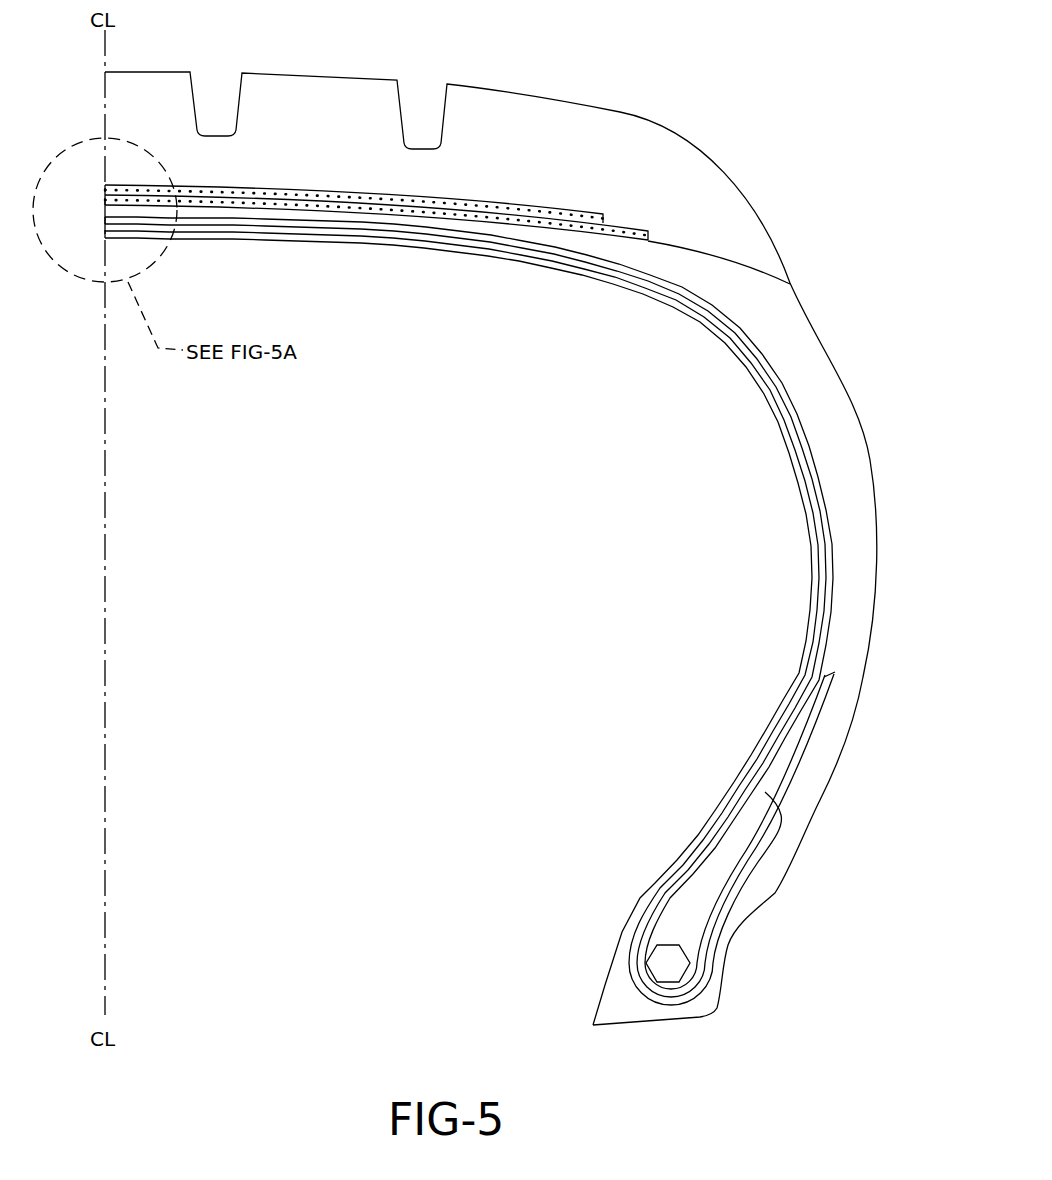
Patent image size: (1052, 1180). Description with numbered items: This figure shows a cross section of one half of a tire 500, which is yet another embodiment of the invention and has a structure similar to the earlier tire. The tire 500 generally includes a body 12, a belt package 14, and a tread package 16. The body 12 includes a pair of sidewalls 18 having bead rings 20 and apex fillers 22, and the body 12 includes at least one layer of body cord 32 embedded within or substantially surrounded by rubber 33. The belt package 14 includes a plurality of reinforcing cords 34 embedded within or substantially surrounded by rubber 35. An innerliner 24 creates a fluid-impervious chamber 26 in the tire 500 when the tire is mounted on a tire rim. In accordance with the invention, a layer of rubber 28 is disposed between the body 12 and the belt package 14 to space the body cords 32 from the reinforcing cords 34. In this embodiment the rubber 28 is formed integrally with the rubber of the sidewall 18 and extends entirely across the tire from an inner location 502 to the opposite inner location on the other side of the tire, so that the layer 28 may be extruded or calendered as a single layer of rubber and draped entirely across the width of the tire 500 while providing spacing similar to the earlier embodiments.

The tire 500 is at (666, 90).
The inner location 502 is at (735, 827).
The body 12 is at (494, 621).
The belt package 14 is at (376, 164).
The tread package 16 is at (350, 80).
The sidewall 18 is at (872, 458).
The bead ring 20 is at (665, 953).
The apex filler 22 is at (694, 900).
The innerliner 24 is at (738, 797).
The fluid-impervious chamber 26 is at (624, 441).
The layer of rubber 28 is at (255, 188).
The body cord 32 is at (555, 258).
The rubber 33 is at (471, 253).
The reinforcing cords 34 is at (574, 220).
The rubber 35 is at (411, 218).